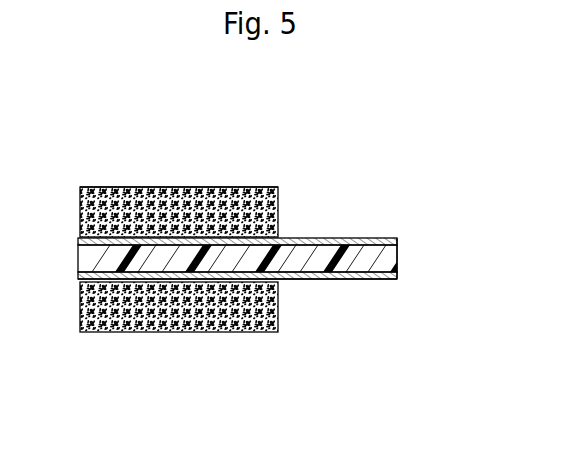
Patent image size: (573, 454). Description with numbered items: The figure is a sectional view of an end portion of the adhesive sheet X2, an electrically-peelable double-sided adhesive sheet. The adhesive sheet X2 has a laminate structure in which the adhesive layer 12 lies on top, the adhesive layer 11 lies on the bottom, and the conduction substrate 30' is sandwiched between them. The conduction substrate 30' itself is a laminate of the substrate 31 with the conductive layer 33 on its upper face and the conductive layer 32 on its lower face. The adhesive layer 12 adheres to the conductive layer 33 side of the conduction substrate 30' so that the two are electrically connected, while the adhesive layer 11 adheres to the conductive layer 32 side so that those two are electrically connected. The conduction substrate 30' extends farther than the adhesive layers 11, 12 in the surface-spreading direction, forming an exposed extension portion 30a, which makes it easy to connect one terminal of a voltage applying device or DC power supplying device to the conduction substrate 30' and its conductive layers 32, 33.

The adhesive layer 12 is at (278, 205).
The adhesive layer 11 is at (278, 303).
The conductive layer 33 is at (400, 240).
The substrate 31 is at (400, 259).
The conductive layer 32 is at (400, 275).
The conduction substrate 30' is at (458, 252).
The extension portion 30a is at (347, 280).
The adhesive sheet X2 is at (111, 170).